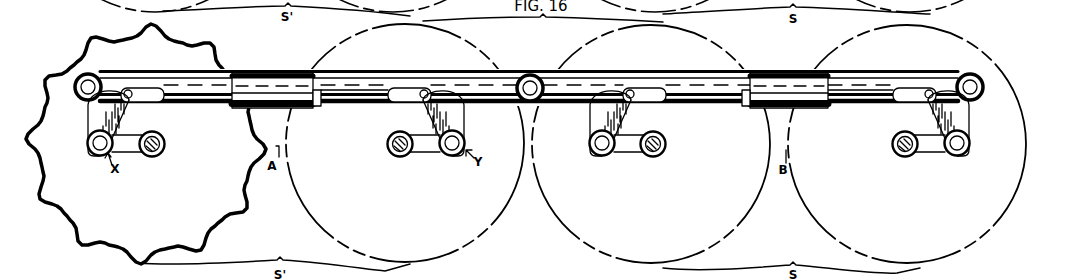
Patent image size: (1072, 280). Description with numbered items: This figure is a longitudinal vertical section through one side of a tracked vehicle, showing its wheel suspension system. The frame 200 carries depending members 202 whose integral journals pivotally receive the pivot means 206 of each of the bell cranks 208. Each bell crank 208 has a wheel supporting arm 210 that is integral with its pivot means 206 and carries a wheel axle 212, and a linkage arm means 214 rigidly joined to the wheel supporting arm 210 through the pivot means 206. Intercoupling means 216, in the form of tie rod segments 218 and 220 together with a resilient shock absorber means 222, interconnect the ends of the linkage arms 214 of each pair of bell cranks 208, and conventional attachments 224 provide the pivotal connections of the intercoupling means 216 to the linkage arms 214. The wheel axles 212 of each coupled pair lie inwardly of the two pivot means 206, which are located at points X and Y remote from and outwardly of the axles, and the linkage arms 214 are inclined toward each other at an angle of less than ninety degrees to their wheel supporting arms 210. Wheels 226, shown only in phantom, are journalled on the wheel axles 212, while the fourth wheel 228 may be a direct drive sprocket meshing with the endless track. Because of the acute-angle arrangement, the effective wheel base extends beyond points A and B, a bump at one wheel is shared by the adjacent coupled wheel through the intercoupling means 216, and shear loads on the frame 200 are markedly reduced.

The frame 200 is at (507, 85).
The depending members 202 is at (95, 113).
The pivot means 206 is at (95, 157).
The bell cranks 208 is at (126, 136).
The wheel supporting arms 210 is at (138, 155).
The wheel axles 212 is at (165, 143).
The linkage arm means 214 is at (88, 137).
The intercoupling means 216 is at (337, 93).
The tie rod segment 218 is at (365, 95).
The tie rod segment 220 is at (177, 100).
The resilient shock absorber means 222 is at (268, 92).
The attachments 224 is at (130, 90).
The wheels 226 is at (478, 230).
The fourth wheel 228 is at (232, 213).